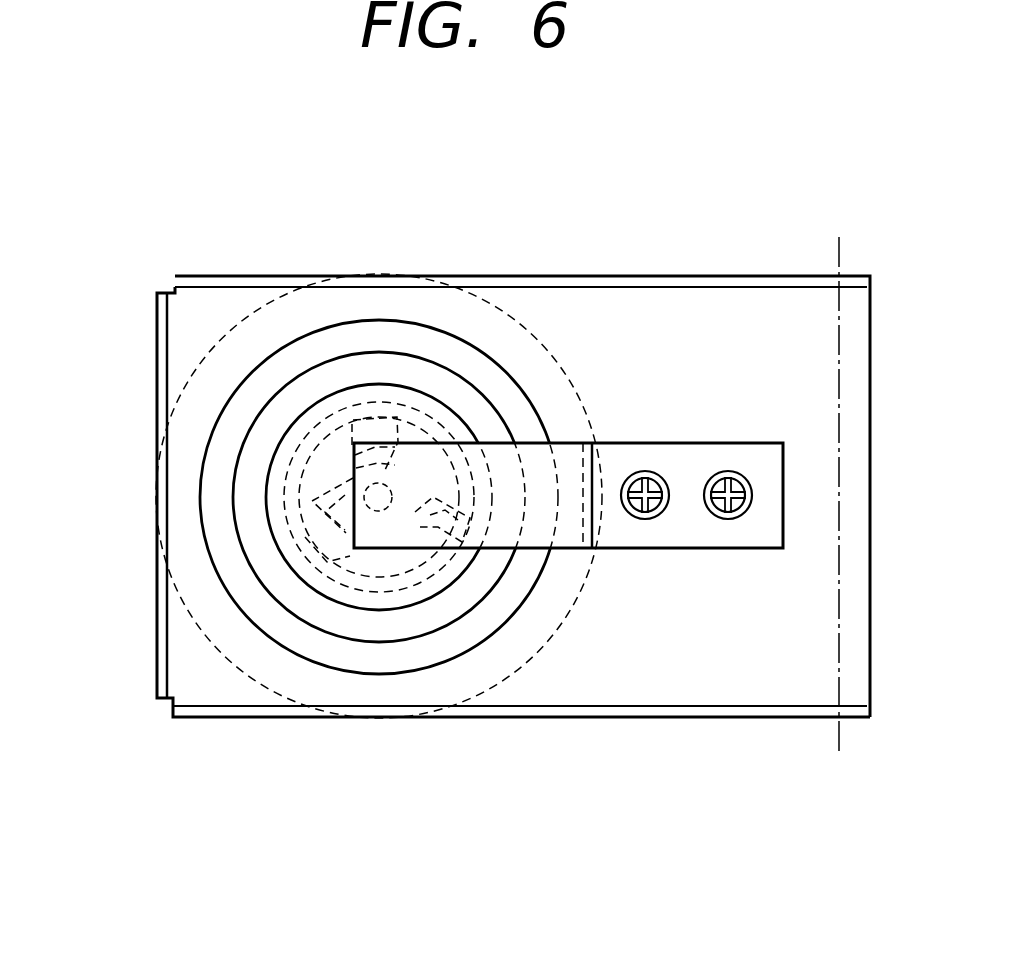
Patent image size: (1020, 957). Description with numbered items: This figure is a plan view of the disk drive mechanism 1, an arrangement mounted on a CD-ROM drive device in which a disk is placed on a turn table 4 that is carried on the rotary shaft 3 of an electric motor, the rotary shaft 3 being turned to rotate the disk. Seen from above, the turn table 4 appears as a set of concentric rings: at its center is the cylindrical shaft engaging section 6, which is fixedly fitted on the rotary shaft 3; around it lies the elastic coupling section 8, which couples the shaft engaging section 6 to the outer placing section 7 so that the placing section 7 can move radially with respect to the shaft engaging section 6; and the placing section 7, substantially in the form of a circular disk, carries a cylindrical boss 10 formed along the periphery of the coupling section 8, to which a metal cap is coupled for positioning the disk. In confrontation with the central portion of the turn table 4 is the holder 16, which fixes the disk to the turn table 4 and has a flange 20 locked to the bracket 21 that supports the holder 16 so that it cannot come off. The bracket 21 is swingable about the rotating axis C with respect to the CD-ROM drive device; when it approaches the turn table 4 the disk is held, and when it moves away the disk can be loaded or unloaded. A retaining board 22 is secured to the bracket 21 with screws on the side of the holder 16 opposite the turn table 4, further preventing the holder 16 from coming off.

The disk drive mechanism 1 is at (634, 216).
The rotary shaft 3 is at (397, 470).
The turn table 4 is at (596, 391).
The shaft engaging section 6 is at (427, 560).
The placing section 7 is at (462, 318).
The elastic coupling section 8 is at (290, 540).
The cylindrical boss 10 is at (287, 430).
The holder 16 is at (195, 428).
The flange 20 is at (332, 342).
The bracket 21 is at (670, 675).
The retaining board 22 is at (683, 543).
The rotating axis C is at (839, 733).